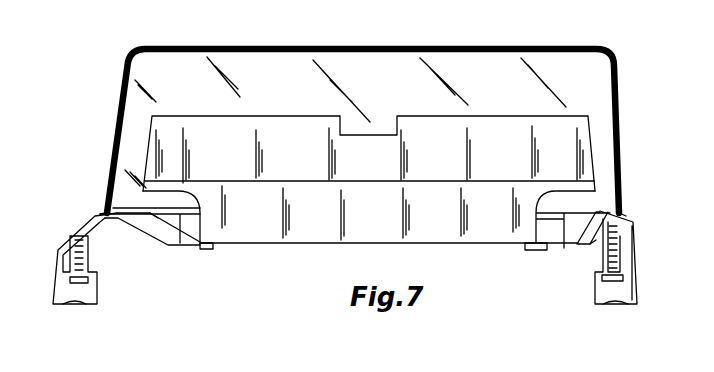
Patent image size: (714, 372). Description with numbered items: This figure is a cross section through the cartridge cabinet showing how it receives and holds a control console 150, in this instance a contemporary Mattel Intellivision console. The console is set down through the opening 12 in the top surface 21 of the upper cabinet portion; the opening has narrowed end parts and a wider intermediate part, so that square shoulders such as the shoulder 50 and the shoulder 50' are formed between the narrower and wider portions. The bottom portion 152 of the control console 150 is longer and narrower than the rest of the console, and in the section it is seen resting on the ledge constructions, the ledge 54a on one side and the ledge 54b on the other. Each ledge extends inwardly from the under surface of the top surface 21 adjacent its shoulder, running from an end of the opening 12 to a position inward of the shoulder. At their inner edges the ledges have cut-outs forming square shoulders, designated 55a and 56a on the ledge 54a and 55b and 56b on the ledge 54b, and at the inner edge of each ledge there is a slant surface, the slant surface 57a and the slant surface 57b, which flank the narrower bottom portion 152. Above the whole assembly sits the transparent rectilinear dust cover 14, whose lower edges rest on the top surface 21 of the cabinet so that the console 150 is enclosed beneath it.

The transparent rectilinear dust cover 14 is at (452, 46).
The control console 150 is at (478, 110).
The lower portion of the control console 152 is at (308, 232).
The opening 12 is at (158, 209).
The square shoulder 50' is at (183, 219).
The square shoulder 50 is at (543, 219).
The top surface 21 is at (118, 207).
The slant surface 57b is at (155, 228).
The square shoulder 56b is at (193, 251).
The square shoulder 55b is at (208, 247).
The ledge construction 54b is at (167, 258).
The slant surface 57a is at (586, 242).
The square shoulder 56a is at (542, 250).
The square shoulder 55a is at (523, 248).
The ledge construction 54a is at (494, 253).